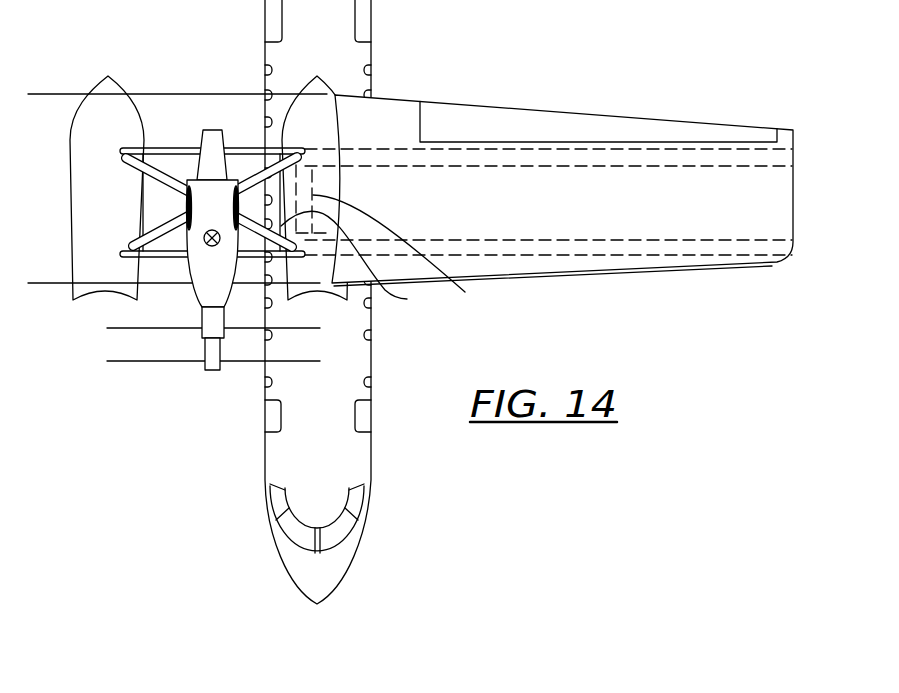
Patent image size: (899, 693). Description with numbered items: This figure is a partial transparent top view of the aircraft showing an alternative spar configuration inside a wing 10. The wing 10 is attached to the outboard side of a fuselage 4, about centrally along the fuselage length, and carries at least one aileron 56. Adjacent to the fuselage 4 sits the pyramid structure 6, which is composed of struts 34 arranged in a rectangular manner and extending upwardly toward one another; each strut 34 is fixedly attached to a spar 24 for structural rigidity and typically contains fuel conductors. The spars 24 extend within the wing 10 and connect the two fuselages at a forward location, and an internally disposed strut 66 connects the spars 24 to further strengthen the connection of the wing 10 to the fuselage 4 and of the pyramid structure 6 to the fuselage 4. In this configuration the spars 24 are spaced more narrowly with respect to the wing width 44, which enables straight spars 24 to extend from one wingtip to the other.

The fuselage 4 is at (372, 458).
The pyramid structure 6 is at (173, 136).
The wing 10 is at (572, 268).
The spar 24 is at (383, 148).
The strut 34 is at (360, 265).
The wing width 44 is at (42, 271).
The aileron 56 is at (603, 112).
The internally disposed strut 66 is at (406, 254).